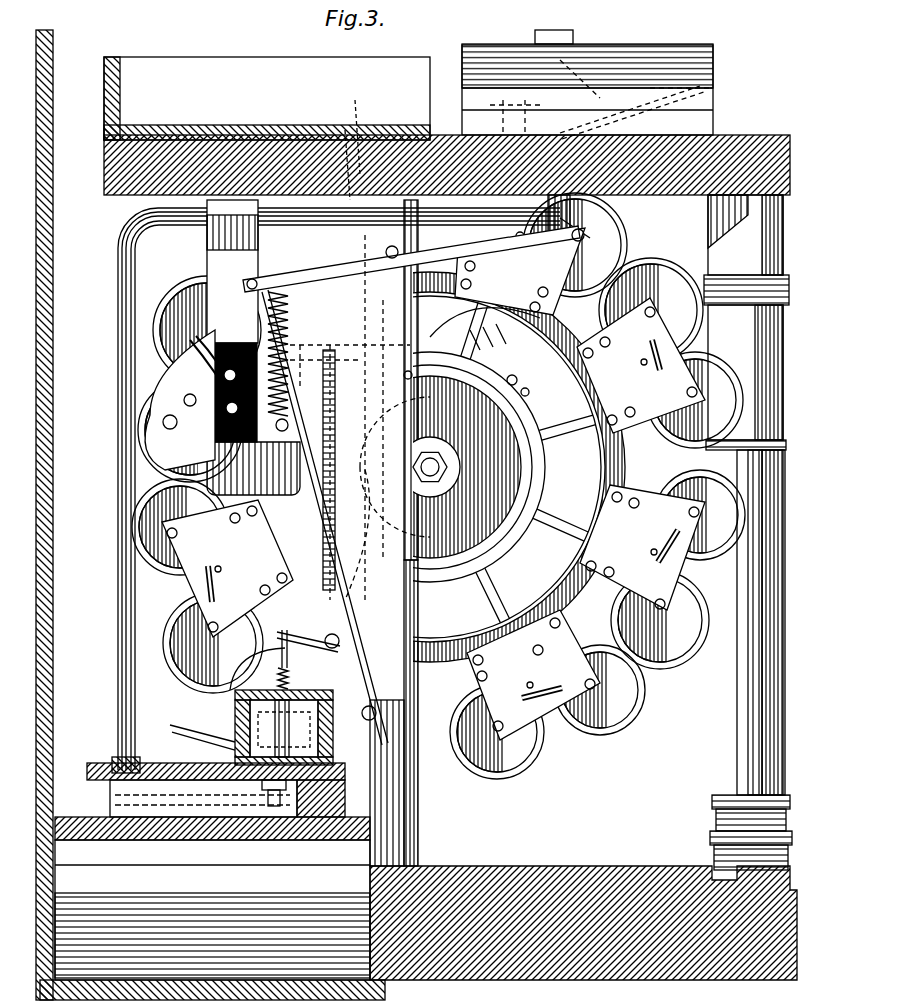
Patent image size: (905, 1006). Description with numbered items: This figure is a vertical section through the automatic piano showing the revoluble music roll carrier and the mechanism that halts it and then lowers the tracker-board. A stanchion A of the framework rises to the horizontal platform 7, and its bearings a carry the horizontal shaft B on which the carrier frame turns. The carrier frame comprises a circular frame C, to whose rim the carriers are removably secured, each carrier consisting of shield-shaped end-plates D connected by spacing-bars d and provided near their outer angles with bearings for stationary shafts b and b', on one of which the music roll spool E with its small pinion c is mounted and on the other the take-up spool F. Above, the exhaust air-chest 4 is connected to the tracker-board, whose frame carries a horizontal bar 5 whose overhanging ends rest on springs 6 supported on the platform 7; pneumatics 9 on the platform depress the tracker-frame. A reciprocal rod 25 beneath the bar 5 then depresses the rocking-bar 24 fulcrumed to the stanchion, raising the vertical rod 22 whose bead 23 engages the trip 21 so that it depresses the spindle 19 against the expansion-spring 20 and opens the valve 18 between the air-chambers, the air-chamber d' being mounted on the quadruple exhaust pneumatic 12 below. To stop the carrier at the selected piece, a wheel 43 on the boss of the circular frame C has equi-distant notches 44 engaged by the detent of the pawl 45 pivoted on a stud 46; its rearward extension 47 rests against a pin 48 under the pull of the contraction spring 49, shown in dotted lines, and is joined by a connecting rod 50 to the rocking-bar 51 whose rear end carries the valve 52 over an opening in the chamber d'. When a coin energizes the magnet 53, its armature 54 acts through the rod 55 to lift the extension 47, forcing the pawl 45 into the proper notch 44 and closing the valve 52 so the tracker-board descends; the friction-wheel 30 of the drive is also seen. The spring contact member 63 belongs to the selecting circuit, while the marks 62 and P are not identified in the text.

The exhaust air-chest 4 is at (267, 98).
The magnet 53 is at (352, 118).
The horizontal bar 5 is at (573, 38).
The springs 6 is at (645, 108).
The pneumatics 9 is at (713, 75).
The platform 7 is at (748, 135).
The reciprocal rod 25 is at (575, 212).
The rocking-bar 24 is at (300, 272).
The armature 54 is at (304, 358).
The rearward extension 47 is at (386, 420).
The rod 55 is at (350, 417).
The stud 46 is at (485, 317).
The pawl 45 is at (504, 337).
The pin 62 is at (533, 366).
The spring contact member 63 is at (548, 383).
The pin 48 is at (395, 360).
The contraction spring 49 is at (350, 378).
The bearings a is at (420, 462).
The horizontal shaft B is at (415, 478).
The wheel 43 is at (540, 438).
The notches 44 is at (535, 490).
The end-plates D is at (575, 608).
The stationary shaft b is at (438, 443).
The plate P is at (586, 612).
The circular frame C is at (430, 467).
The stanchion A is at (420, 630).
The spacing-bars d is at (525, 652).
The friction-wheel 30 is at (330, 538).
The vertical rod 22 is at (340, 580).
The trip 21 is at (335, 640).
The expansion-spring 20 is at (285, 628).
The connecting rod 50 is at (335, 676).
The bead 23 is at (370, 708).
The rocking-bar 51 is at (240, 700).
The pinion c is at (222, 712).
The valve 52 is at (197, 735).
The air-chamber d' is at (111, 750).
The valve 18 is at (216, 790).
The spindle 19 is at (410, 775).
The quadruple exhaust pneumatic 12 is at (420, 866).
The take-up spool F is at (665, 665).
The music roll spool E is at (612, 722).
The stationary shaft b' is at (462, 783).